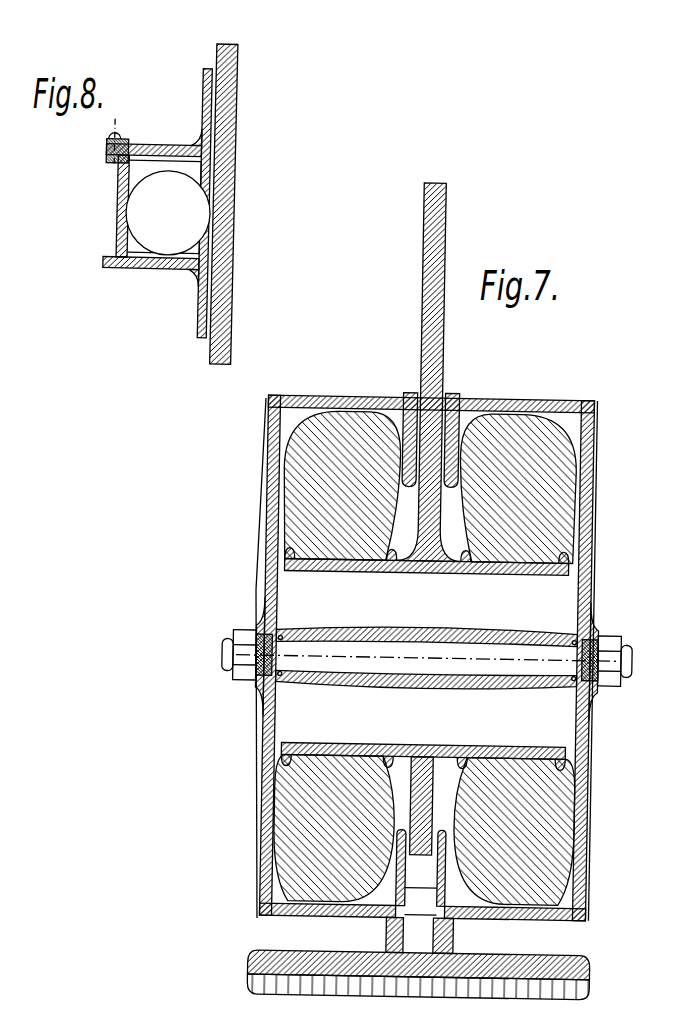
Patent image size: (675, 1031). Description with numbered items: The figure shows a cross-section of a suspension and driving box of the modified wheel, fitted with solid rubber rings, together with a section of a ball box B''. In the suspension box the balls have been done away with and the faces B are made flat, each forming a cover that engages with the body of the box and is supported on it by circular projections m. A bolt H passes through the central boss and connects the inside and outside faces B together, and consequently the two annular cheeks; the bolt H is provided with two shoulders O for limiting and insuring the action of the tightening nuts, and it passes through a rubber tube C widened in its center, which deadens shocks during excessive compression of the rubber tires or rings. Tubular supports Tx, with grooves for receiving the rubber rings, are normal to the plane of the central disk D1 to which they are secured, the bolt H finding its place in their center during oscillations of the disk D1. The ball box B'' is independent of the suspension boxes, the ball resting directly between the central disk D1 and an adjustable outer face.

In FIG. 8, the ball box B'' is at (157, 202).
In FIG. 7, the faces B is at (426, 695).
In FIG. 7, the driving shaft D1 is at (447, 362).
In FIG. 7, the tubular supports Tx is at (425, 659).
In FIG. 7, the circular projections m is at (303, 393).
In FIG. 7, the rubber tube C is at (427, 659).
In FIG. 7, the bolt H is at (222, 662).
In FIG. 7, the shoulders O is at (279, 638).